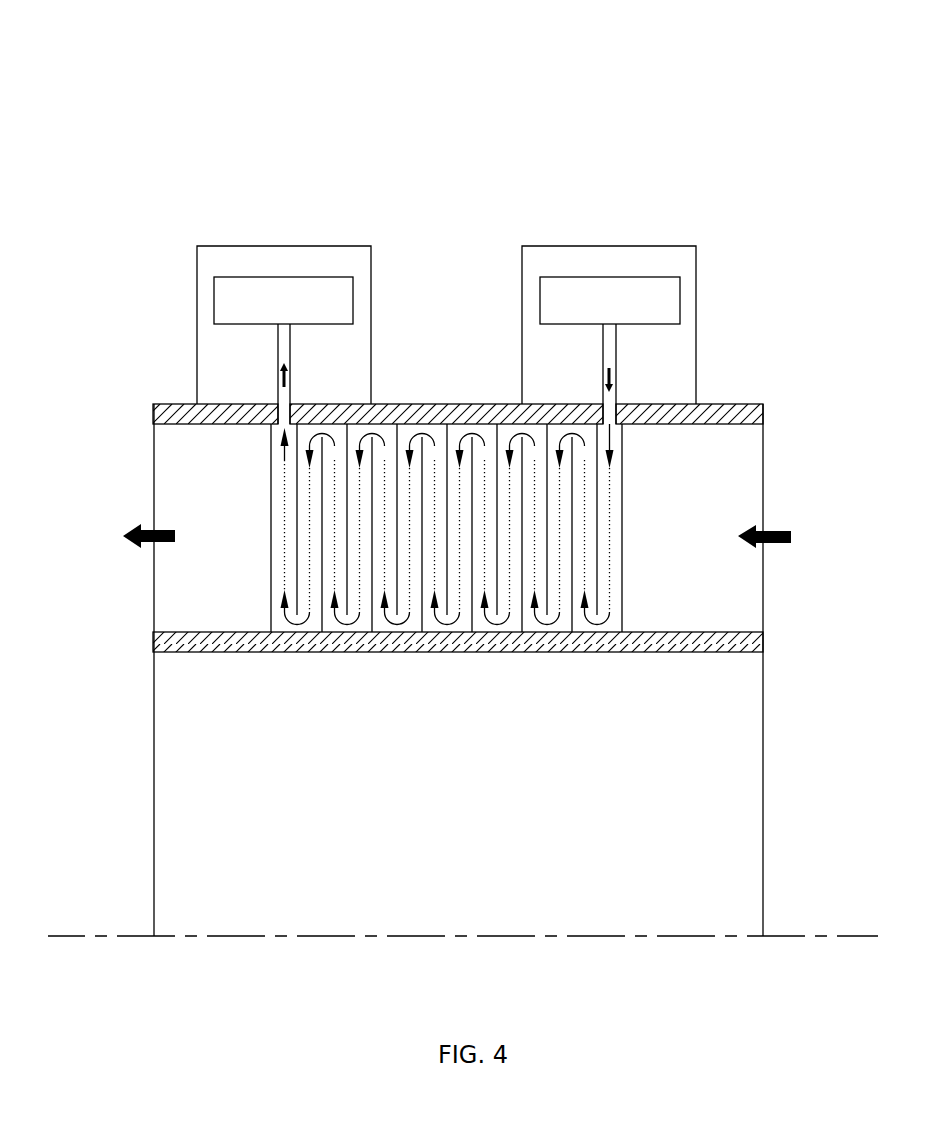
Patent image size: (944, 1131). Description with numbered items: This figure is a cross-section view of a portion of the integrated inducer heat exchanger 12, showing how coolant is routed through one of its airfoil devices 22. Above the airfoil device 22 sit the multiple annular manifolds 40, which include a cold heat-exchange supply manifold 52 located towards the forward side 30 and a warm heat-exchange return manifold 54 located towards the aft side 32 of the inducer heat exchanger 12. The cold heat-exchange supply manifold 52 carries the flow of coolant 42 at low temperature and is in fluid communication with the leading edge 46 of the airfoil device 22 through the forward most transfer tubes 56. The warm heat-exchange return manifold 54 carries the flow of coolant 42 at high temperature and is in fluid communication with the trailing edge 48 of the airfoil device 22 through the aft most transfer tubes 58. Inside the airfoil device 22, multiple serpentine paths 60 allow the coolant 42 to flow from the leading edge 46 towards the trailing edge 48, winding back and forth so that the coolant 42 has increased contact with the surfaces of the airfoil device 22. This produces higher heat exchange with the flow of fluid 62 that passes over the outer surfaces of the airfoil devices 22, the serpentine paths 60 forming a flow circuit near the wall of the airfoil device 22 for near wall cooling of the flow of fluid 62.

The integrated inducer heat exchanger 12 is at (780, 78).
The airfoil device 22 is at (622, 613).
The forward side 30 is at (774, 792).
The aft side 32 is at (126, 792).
The annular manifolds 40 is at (527, 227).
The flow of coolant 42 is at (290, 375).
The leading edge 46 is at (622, 457).
The trailing edge 48 is at (268, 497).
The cold heat-exchange supply manifold 52 is at (580, 277).
The warm heat-exchange return manifold 54 is at (254, 277).
The forward most transfer tubes 56 is at (607, 355).
The aft most transfer tubes 58 is at (282, 352).
The serpentine paths 60 is at (403, 625).
The flow of fluid 62 is at (781, 527).